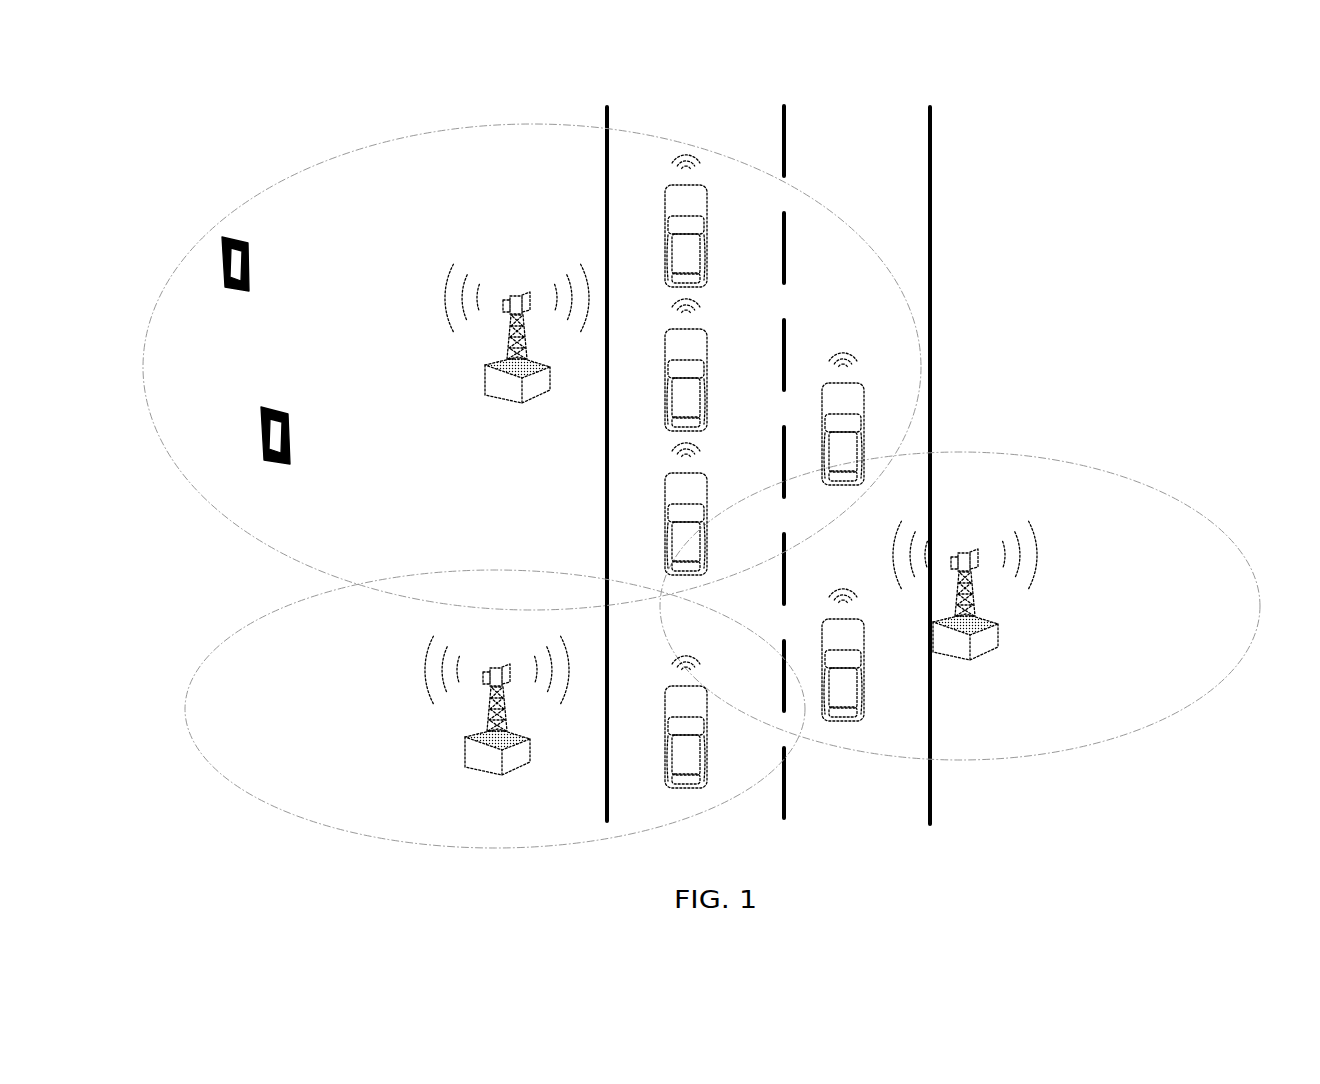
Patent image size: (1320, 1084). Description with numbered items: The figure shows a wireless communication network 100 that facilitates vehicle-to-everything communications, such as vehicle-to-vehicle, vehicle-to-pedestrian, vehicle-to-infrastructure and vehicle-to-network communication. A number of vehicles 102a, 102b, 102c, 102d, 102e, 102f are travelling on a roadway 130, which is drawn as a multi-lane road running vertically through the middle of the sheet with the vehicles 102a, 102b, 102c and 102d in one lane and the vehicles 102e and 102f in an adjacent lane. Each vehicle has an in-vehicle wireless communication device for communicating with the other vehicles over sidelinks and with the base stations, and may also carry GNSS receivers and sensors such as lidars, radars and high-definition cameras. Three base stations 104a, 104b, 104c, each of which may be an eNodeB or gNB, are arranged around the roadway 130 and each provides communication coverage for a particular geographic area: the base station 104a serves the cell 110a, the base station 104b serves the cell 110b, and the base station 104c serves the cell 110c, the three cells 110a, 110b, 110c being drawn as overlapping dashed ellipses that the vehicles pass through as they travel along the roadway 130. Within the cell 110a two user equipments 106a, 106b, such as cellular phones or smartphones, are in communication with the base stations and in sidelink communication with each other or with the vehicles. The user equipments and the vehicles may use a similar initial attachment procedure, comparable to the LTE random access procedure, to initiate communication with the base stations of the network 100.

The wireless communication network 100 is at (1111, 171).
The vehicle 102a is at (731, 211).
The vehicle 102b is at (729, 333).
The vehicle 102c is at (729, 487).
The vehicle 102d is at (729, 756).
The vehicle 102e is at (888, 397).
The vehicle 102f is at (888, 624).
The base station 104a is at (484, 371).
The base station 104b is at (464, 742).
The base station 104c is at (998, 635).
The user equipment 106a is at (250, 262).
The user equipment 106b is at (290, 432).
The cell 110a is at (353, 151).
The cell 110b is at (270, 612).
The cell 110c is at (1100, 472).
The roadway 130 is at (862, 149).